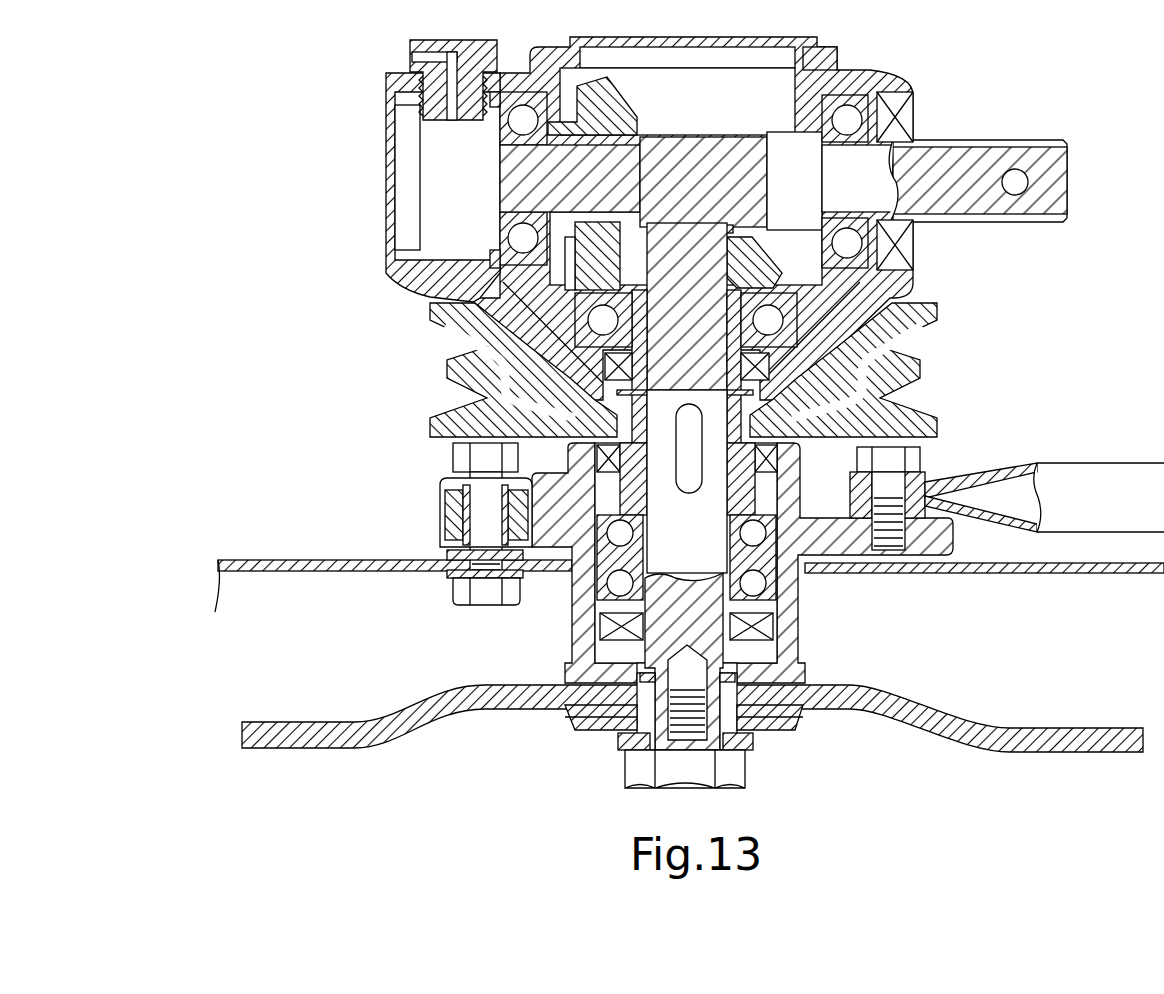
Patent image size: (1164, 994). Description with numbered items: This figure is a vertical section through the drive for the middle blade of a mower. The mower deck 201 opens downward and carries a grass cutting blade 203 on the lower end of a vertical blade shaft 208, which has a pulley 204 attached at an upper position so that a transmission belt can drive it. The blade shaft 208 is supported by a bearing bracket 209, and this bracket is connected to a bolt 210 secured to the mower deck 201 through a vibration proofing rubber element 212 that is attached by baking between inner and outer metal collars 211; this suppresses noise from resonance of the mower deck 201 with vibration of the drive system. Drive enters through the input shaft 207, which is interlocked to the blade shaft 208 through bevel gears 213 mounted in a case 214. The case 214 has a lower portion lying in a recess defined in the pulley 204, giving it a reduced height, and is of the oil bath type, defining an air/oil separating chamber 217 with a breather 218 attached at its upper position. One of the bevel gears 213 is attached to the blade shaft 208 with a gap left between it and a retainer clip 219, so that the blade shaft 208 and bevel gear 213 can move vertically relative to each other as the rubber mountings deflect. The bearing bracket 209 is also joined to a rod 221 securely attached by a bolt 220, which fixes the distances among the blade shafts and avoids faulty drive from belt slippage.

The mower deck 201 is at (257, 560).
The grass cutting blade 203 is at (310, 725).
The pulley 204 is at (917, 370).
The input shaft 207 is at (1002, 142).
The blade shaft 208 is at (720, 493).
The bearing bracket 209 is at (565, 606).
The bolt 210 is at (460, 462).
The inner and outer metal collars 211 is at (443, 513).
The vibration proofing rubber element 212 is at (440, 522).
The bevel gears 213 is at (615, 103).
The case 214 is at (833, 68).
The air/oil separating chamber 217 is at (430, 211).
The breather 218 is at (412, 53).
The retainer clip 219 is at (730, 233).
The bolt 220 is at (913, 460).
The rod 221 is at (1115, 470).